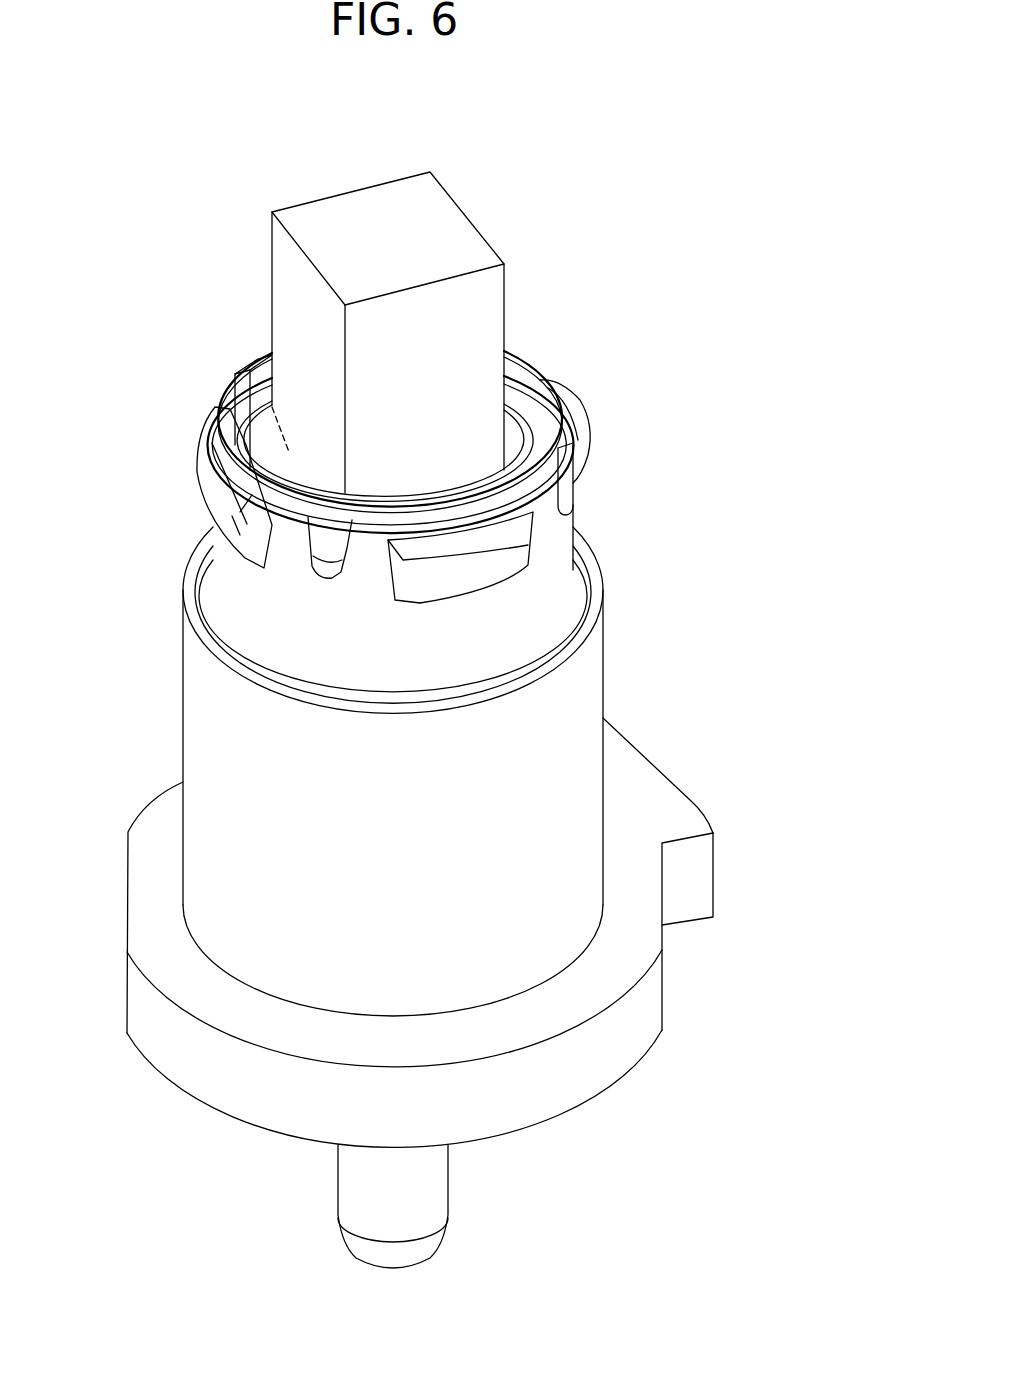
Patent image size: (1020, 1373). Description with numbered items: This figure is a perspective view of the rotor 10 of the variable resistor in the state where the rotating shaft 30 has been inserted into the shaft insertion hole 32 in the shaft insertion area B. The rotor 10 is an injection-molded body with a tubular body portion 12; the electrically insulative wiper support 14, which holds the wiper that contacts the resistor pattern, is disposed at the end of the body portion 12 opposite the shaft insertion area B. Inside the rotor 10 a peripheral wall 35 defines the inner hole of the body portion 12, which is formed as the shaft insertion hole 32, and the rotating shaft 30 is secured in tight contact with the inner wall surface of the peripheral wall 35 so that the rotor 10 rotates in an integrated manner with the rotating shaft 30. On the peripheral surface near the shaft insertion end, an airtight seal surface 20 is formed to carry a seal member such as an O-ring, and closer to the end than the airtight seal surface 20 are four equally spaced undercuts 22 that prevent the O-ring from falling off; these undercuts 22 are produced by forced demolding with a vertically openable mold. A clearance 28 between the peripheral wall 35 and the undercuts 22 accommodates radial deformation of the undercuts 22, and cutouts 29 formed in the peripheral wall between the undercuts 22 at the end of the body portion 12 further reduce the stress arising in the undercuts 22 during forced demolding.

The rotor 10 is at (722, 512).
The body portion 12 is at (580, 688).
The wiper support 14 is at (698, 887).
The airtight seal surface 20 is at (590, 568).
The undercuts 22 is at (582, 420).
The clearance 28 is at (508, 418).
The cutouts 29 is at (237, 400).
The rotating shaft 30 is at (437, 218).
The shaft insertion hole 32 is at (523, 392).
The peripheral wall 35 is at (275, 455).
The shaft insertion area B is at (530, 320).